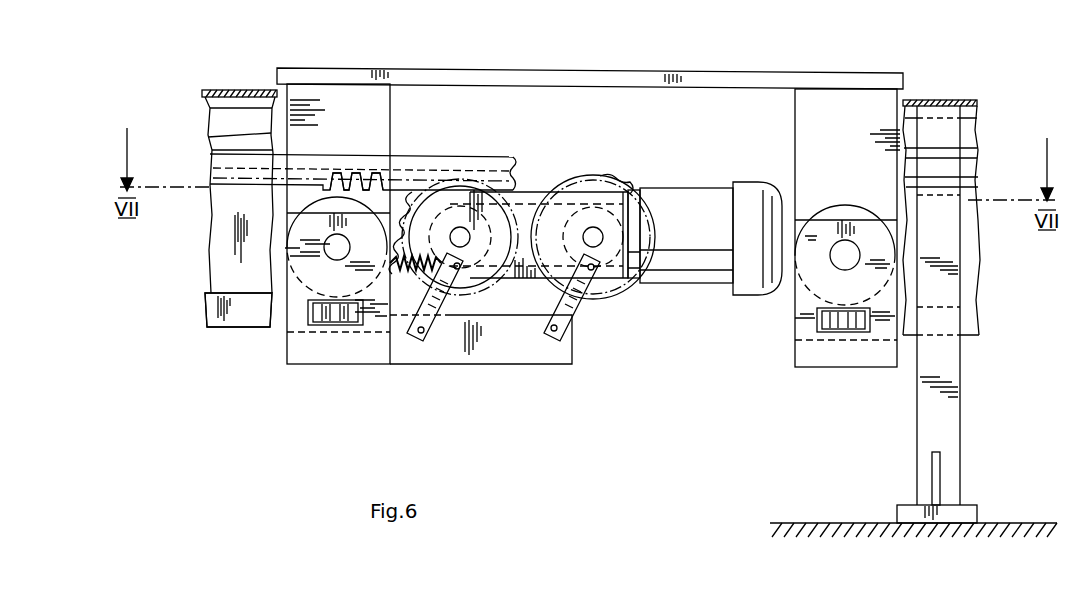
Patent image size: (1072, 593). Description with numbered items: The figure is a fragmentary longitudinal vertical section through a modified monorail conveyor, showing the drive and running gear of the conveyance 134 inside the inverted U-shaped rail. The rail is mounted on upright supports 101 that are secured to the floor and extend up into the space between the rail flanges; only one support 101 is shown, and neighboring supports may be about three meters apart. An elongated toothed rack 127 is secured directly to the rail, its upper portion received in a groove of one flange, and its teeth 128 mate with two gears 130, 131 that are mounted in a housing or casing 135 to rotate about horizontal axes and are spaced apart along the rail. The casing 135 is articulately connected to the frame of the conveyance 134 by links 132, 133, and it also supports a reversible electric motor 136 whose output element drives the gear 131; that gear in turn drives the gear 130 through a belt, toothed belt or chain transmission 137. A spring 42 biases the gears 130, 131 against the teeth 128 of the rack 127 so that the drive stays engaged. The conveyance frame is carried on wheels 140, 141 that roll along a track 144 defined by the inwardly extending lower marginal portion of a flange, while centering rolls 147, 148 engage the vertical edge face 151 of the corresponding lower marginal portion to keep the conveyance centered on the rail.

The spring 42 is at (401, 271).
The upright support 101 is at (925, 434).
The toothed rack 127 is at (303, 160).
The teeth 128 is at (362, 171).
The gear 130 is at (415, 188).
The gear 131 is at (593, 190).
The link 132 is at (440, 345).
The link 133 is at (585, 300).
The conveyance 134 is at (599, 64).
The casing 135 is at (416, 364).
The reversible electric motor 136 is at (690, 262).
The transmission 137 is at (531, 202).
The wheel 140 is at (296, 266).
The wheel 141 is at (826, 214).
The track 144 is at (212, 288).
The centering roll 147 is at (337, 322).
The centering roll 148 is at (843, 331).
The vertical edge face 151 is at (244, 313).